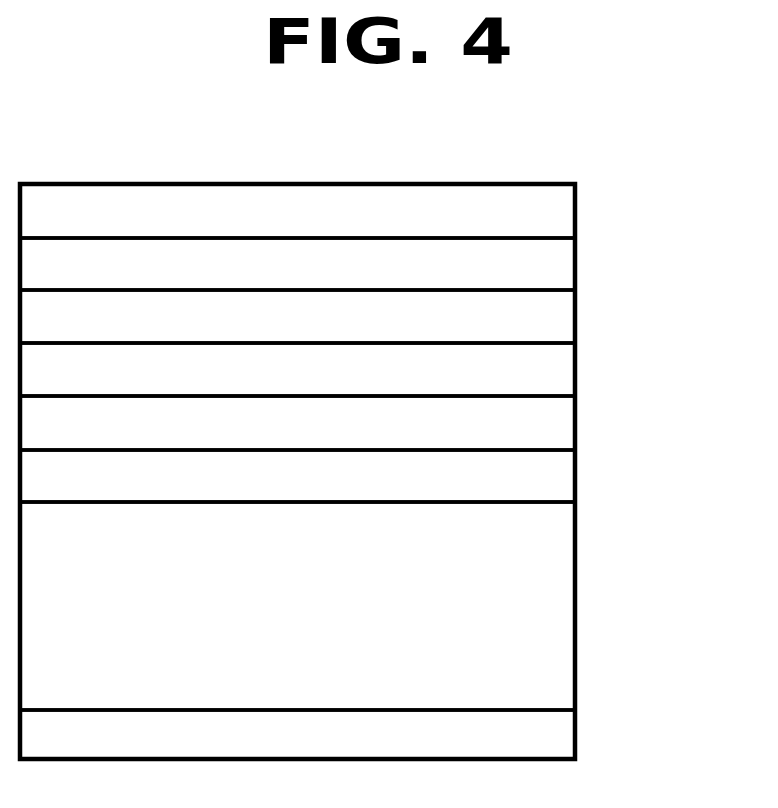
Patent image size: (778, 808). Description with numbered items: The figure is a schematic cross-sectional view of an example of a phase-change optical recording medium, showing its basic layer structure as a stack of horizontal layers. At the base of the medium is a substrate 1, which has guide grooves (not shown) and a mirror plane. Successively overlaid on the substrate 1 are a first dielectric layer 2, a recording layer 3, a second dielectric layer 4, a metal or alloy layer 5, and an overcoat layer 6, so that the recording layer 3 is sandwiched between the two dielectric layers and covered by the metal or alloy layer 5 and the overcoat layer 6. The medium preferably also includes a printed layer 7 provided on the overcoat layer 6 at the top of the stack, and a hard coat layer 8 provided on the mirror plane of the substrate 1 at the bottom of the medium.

The substrate 1 is at (543, 637).
The first dielectric layer 2 is at (575, 478).
The recording layer 3 is at (575, 428).
The second dielectric layer 4 is at (572, 377).
The metal or alloy layer 5 is at (568, 320).
The overcoat layer 6 is at (567, 266).
The printed layer 7 is at (570, 212).
The hard coat layer 8 is at (577, 743).